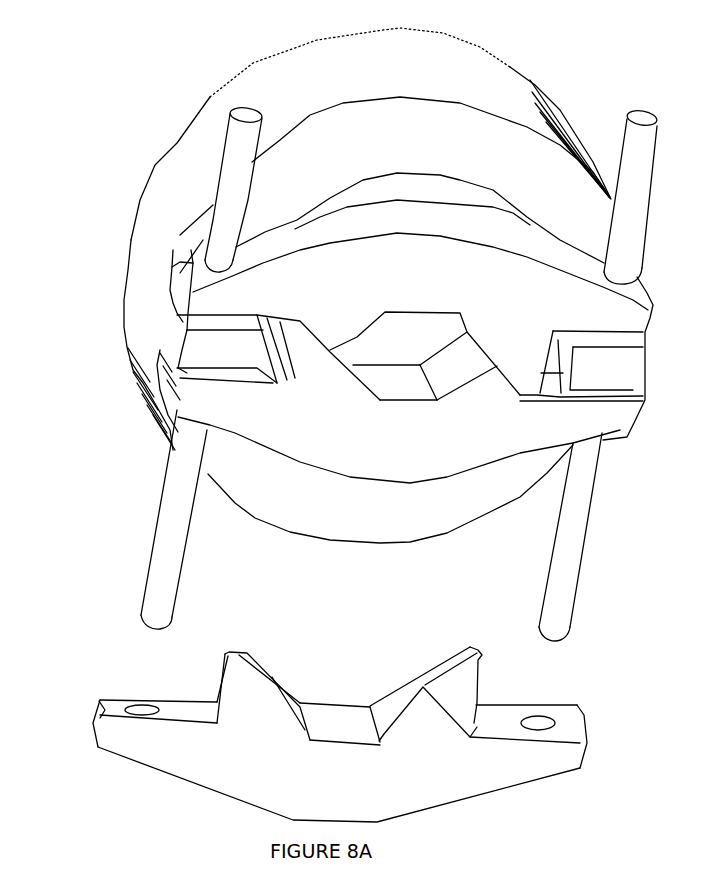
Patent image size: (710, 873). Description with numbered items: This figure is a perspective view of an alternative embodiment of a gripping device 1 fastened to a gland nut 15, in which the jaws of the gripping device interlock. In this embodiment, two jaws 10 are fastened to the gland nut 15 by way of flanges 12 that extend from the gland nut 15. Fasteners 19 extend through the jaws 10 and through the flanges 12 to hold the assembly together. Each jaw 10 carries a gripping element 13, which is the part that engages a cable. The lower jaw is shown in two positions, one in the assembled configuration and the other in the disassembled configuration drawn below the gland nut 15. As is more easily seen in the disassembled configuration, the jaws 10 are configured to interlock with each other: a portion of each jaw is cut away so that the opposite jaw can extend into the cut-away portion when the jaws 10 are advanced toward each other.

The gripping device 1 is at (218, 467).
The jaws 10 is at (190, 267).
The flanges 12 is at (177, 327).
The gripping element 13 is at (358, 332).
The gland nut 15 is at (447, 515).
The fasteners 19 is at (640, 150).